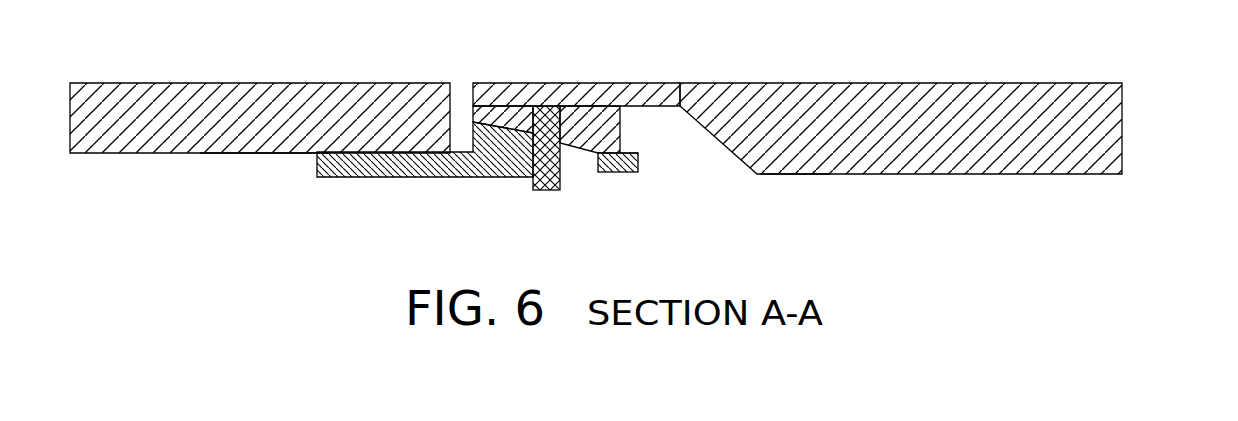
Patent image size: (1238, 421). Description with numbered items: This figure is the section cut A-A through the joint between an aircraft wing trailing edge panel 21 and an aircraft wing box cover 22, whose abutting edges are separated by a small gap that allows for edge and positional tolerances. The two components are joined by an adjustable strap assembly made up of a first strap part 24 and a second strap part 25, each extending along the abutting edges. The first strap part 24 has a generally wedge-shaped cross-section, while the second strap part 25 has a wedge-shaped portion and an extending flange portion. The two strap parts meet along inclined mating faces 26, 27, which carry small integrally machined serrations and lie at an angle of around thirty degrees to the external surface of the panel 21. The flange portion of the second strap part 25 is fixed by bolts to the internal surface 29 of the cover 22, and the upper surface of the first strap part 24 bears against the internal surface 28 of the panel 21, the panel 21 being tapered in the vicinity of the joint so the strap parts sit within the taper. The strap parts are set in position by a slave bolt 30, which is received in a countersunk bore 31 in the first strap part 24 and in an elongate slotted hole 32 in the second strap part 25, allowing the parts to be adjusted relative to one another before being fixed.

The aircraft wing trailing edge panel 21 is at (873, 95).
The aircraft wing box cover 22 is at (265, 85).
The first strap part 24 is at (607, 94).
The second strap part 25 is at (415, 178).
The inclined mating face 26 is at (575, 157).
The inclined mating face 27 is at (637, 151).
The internal surface 28 is at (792, 179).
The internal surface 29 is at (261, 158).
The slave bolt 30 is at (560, 94).
The countersunk bore 31 is at (518, 97).
The elongate slotted hole 32 is at (590, 178).